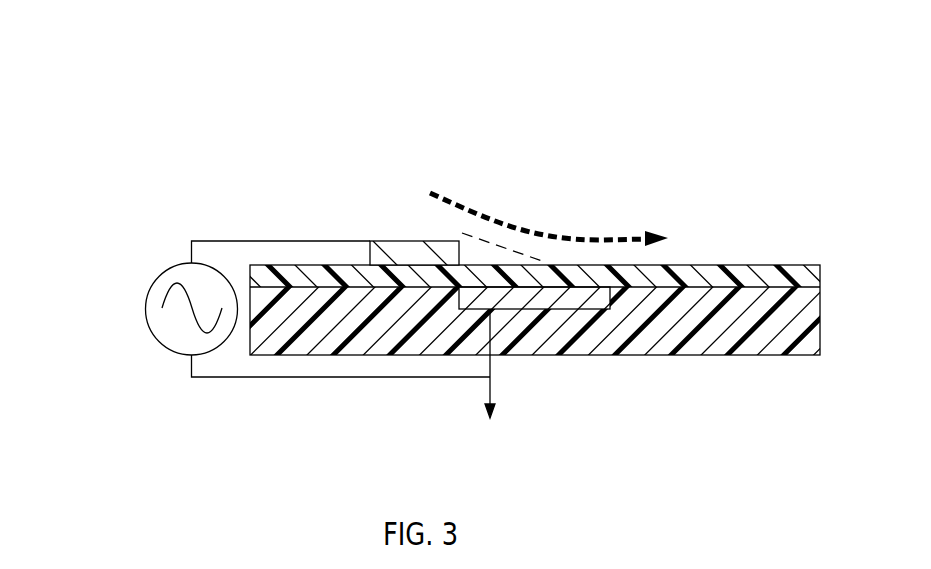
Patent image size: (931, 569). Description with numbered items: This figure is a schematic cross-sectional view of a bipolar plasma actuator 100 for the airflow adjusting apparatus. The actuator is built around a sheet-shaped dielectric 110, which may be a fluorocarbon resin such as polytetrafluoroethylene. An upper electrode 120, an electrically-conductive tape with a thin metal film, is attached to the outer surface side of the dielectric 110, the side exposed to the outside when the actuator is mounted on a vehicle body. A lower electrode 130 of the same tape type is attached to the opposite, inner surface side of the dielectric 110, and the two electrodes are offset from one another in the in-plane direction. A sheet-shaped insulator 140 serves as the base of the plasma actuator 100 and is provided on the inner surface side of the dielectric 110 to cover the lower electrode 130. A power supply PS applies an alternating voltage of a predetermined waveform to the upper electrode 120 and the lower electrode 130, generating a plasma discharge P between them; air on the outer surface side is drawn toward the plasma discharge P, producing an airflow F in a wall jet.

The bipolar plasma actuator 100 is at (310, 140).
The dielectric 110 is at (720, 267).
The upper electrode 120 is at (410, 241).
The lower electrode 130 is at (557, 305).
The insulator 140 is at (670, 354).
The power supply PS is at (160, 277).
The airflow F is at (592, 236).
The plasma discharge P is at (496, 240).